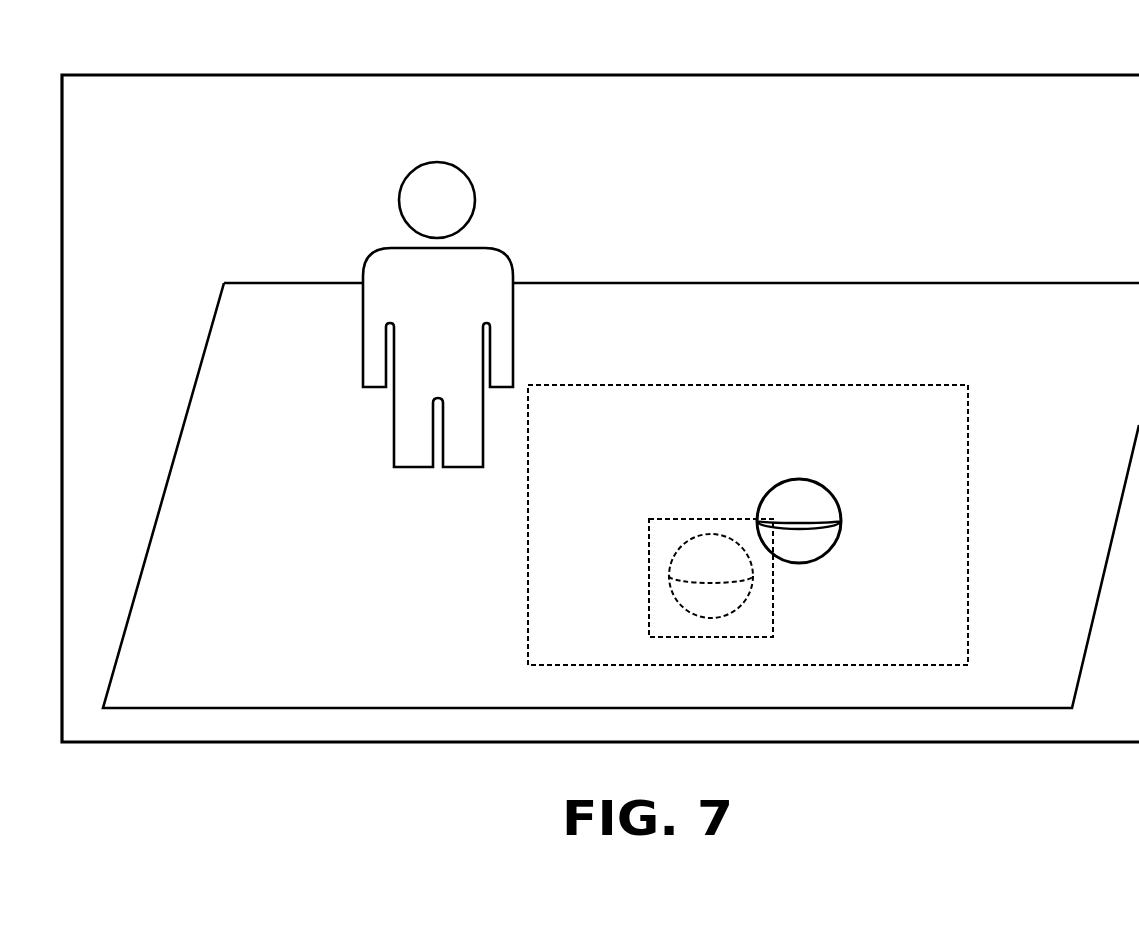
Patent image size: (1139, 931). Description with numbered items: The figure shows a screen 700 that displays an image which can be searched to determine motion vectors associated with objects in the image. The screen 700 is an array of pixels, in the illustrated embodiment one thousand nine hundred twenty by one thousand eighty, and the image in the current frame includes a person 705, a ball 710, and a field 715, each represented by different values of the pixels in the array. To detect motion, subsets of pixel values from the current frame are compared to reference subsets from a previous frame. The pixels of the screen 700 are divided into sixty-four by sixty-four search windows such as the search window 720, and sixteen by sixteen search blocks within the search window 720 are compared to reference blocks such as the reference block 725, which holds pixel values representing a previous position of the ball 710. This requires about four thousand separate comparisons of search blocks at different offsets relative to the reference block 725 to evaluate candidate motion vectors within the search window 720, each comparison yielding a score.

The screen 700 is at (852, 75).
The person 705 is at (361, 275).
The ball 710 is at (830, 493).
The field 715 is at (182, 428).
The search window 720 is at (761, 385).
The reference block 725 is at (702, 519).